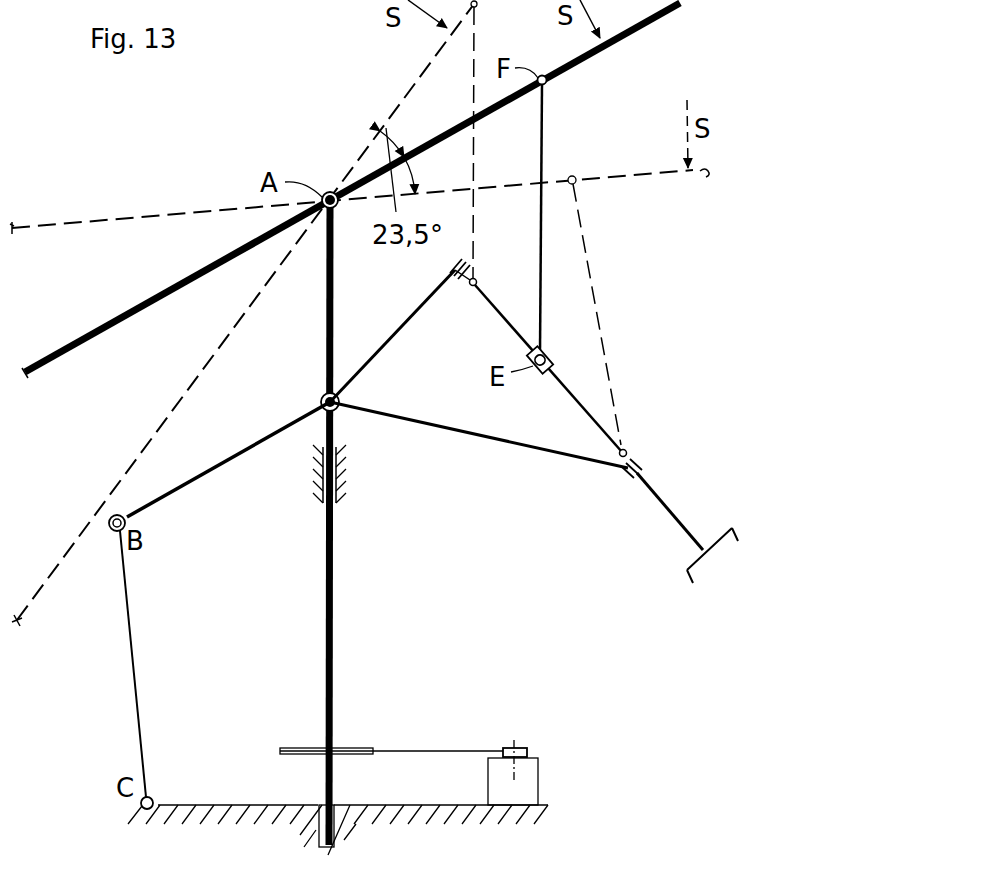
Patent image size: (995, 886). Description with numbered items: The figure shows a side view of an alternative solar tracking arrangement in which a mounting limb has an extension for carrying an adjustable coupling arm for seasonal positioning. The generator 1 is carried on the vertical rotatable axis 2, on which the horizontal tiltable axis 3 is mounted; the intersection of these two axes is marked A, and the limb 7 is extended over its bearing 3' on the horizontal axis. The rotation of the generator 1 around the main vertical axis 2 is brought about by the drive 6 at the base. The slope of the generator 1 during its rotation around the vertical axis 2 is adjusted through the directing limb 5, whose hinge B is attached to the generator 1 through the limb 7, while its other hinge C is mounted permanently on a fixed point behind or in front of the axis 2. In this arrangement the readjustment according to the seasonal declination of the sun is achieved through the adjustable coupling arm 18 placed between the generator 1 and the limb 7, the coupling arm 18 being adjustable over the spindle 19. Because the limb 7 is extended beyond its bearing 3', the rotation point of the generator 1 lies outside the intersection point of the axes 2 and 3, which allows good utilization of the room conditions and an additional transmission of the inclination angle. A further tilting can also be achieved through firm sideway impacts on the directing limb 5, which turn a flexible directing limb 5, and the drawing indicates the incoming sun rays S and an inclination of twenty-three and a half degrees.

The generator 1 is at (205, 367).
The vertical rotatable axis 2 is at (332, 632).
The horizontal tiltable axis 3 is at (331, 177).
The horizontal tiltable axis bearing 3' is at (303, 403).
The directing limb 5 is at (132, 650).
The drive 6 is at (372, 748).
The limb 7 is at (393, 330).
The adjustable coupling arm 18 is at (543, 153).
The spindle 19 is at (575, 395).